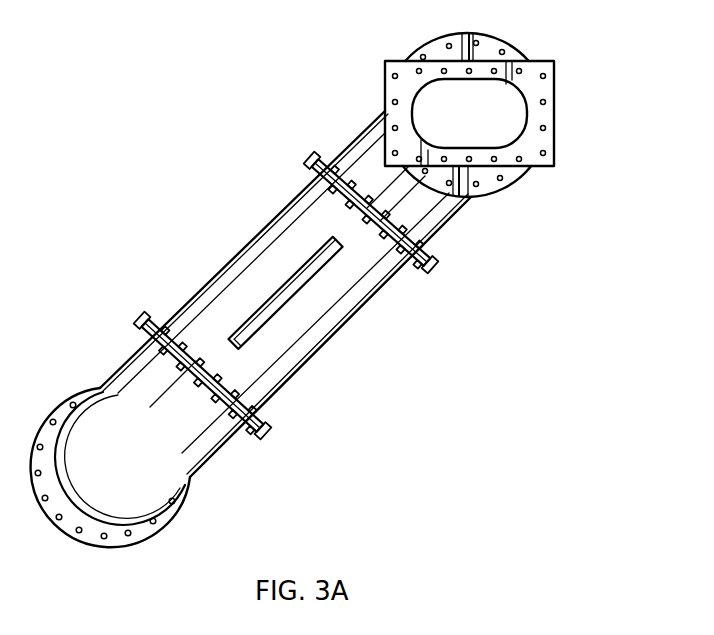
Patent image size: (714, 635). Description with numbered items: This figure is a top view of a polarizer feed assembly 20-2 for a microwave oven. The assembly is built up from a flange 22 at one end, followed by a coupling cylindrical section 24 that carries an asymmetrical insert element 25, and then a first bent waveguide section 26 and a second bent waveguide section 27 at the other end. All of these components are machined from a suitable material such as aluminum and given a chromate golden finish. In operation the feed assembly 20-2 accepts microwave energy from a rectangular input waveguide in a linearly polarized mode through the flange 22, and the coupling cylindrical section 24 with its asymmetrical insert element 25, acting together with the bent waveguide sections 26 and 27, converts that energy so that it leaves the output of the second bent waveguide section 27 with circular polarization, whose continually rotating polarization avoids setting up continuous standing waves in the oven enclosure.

The polarizer feed assembly 20-2 is at (188, 106).
The flange 22 is at (553, 63).
The coupling cylindrical section 24 is at (325, 338).
The asymmetrical insert element 25 is at (248, 315).
The first bent waveguide section 26 is at (455, 194).
The second bent waveguide section 27 is at (182, 437).